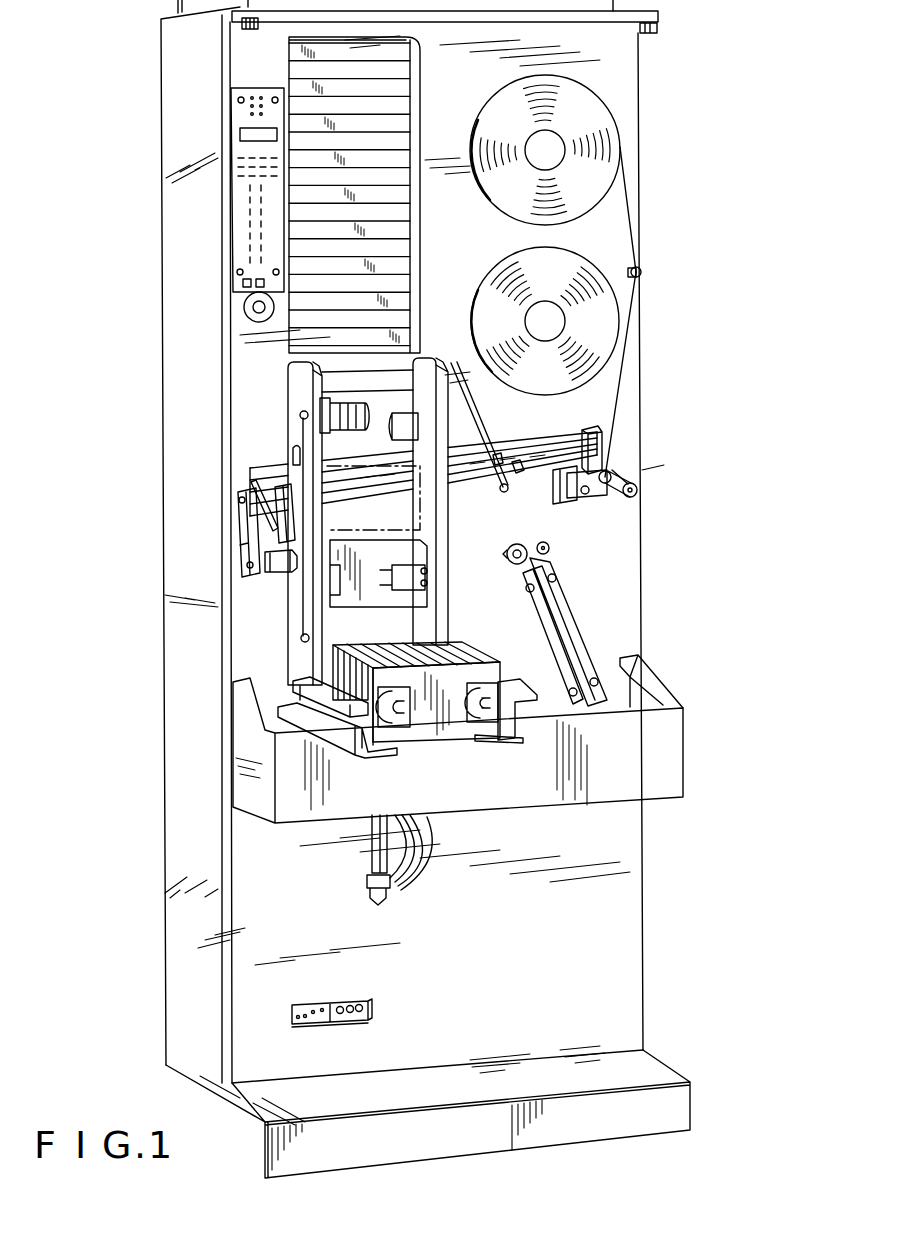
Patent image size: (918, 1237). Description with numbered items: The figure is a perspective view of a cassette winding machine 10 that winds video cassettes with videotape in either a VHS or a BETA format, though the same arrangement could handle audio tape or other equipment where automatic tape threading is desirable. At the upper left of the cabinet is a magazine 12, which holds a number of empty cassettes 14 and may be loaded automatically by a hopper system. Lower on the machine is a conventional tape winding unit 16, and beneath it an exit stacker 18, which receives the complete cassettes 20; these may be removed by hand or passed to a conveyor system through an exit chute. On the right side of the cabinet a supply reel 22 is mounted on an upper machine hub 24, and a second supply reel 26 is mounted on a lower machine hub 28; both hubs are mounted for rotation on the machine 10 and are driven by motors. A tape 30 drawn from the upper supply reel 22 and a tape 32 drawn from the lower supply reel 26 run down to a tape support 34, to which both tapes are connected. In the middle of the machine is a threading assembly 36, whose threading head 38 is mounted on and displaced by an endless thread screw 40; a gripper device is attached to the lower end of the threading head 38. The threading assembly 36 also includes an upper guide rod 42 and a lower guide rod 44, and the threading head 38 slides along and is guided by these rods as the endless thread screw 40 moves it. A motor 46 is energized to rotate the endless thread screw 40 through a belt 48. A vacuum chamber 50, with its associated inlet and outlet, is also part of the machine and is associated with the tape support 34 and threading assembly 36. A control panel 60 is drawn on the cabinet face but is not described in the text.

The cassette winding machine 10 is at (644, 120).
The magazine 12 is at (420, 54).
The empty cassettes 14 is at (403, 103).
The tape winding unit 16 is at (446, 497).
The exit stacker 18 is at (510, 690).
The complete cassettes 20 is at (462, 652).
The supply reel 22 is at (492, 148).
The upper machine hub 24 is at (535, 162).
The supply reel 26 is at (497, 283).
The lower machine hub 28 is at (535, 333).
The tape 30 is at (630, 195).
The tape 32 is at (615, 393).
The tape support 34 is at (565, 500).
The threading assembly 36 is at (262, 474).
The threading head 38 is at (282, 445).
The endless thread screw 40 is at (532, 455).
The upper guide rod 42 is at (545, 451).
The lower guide rod 44 is at (518, 471).
The motor 46 is at (278, 575).
The belt 48 is at (240, 531).
The vacuum chamber 50 is at (568, 600).
The control panel 60 is at (262, 87).